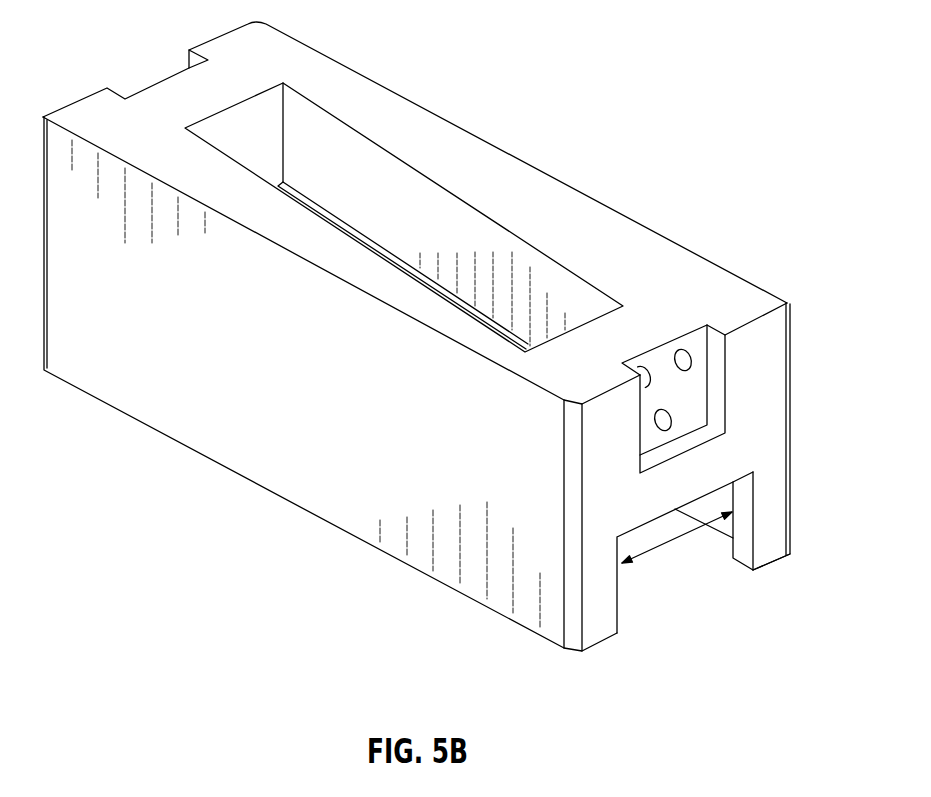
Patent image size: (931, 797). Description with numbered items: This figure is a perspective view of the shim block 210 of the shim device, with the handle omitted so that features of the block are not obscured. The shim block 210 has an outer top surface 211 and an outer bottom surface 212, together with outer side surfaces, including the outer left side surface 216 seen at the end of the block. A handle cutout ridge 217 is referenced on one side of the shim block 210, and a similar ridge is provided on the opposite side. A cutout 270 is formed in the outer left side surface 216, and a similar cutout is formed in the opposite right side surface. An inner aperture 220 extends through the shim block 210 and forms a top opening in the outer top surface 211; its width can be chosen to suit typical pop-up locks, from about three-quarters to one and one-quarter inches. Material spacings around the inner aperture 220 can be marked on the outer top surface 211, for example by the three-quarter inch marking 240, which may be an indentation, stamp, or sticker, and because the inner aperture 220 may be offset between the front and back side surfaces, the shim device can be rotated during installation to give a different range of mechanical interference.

The shim block 210 is at (437, 135).
The outer top surface 211 is at (232, 48).
The outer bottom surface 212 is at (767, 562).
The outer left side surface 216 is at (777, 498).
The handle cutout ridge 217 is at (720, 400).
The inner aperture 220 is at (231, 128).
The 0.75 inch marking 240 is at (365, 265).
The cutout 270 is at (675, 538).